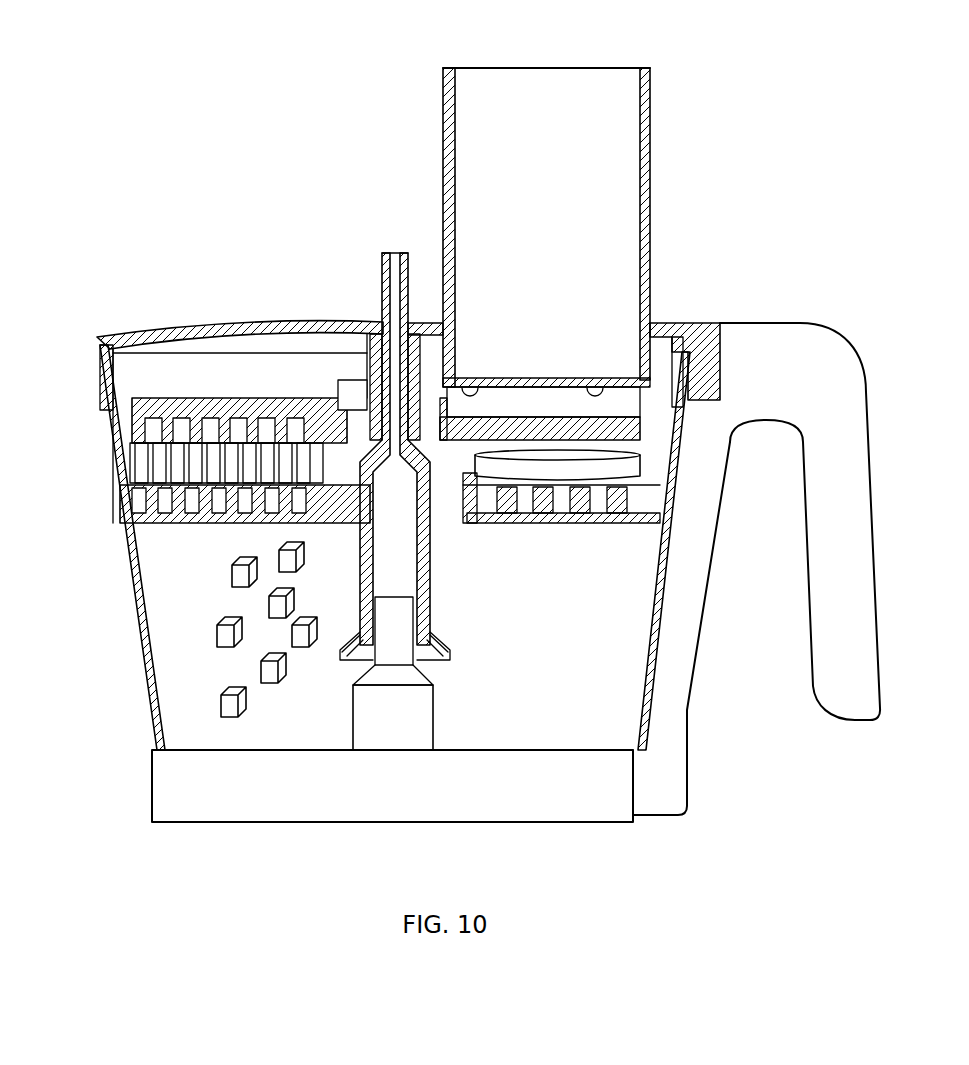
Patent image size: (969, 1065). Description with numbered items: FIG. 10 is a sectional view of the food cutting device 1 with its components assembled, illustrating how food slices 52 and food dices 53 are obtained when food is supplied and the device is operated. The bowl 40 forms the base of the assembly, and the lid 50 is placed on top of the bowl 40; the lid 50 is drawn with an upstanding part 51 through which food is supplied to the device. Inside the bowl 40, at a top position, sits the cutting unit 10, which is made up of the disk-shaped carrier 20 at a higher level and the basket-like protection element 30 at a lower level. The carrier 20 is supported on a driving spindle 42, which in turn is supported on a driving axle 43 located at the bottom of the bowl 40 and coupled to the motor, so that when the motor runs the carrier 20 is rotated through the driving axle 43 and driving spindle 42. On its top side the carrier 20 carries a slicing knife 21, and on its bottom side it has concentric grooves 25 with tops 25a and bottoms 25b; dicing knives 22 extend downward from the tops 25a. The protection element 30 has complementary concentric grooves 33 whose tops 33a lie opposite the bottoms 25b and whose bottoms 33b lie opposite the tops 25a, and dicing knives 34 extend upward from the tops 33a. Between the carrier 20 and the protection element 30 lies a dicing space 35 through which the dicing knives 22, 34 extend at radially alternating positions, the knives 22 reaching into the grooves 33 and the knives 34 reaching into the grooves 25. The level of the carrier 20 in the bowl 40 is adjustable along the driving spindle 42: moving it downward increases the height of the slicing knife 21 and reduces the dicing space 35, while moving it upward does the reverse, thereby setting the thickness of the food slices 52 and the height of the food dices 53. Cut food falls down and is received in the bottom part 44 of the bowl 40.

The food cutting device 1 is at (160, 103).
The cutting unit 10 is at (78, 383).
The carrier 20 is at (178, 415).
The slicing knife 21 is at (530, 378).
The dicing knives 22 is at (135, 458).
The grooves 25 is at (238, 430).
The tops of the grooves 25a is at (282, 440).
The bottoms of the grooves 25b is at (298, 428).
The protection element 30 is at (147, 522).
The grooves 33 is at (193, 500).
The tops of the grooves 33a is at (210, 487).
The bottoms of the grooves 33b is at (197, 510).
The dicing knives 34 is at (168, 462).
The dicing space 35 is at (190, 463).
The bowl 40 is at (688, 710).
The driving spindle 42 is at (430, 580).
The driving axle 43 is at (433, 716).
The bottom part of the bowl 44 is at (600, 612).
The lid 50 is at (680, 322).
The feed tube 51 is at (650, 150).
The food slices 52 is at (627, 465).
The food dices 53 is at (243, 706).